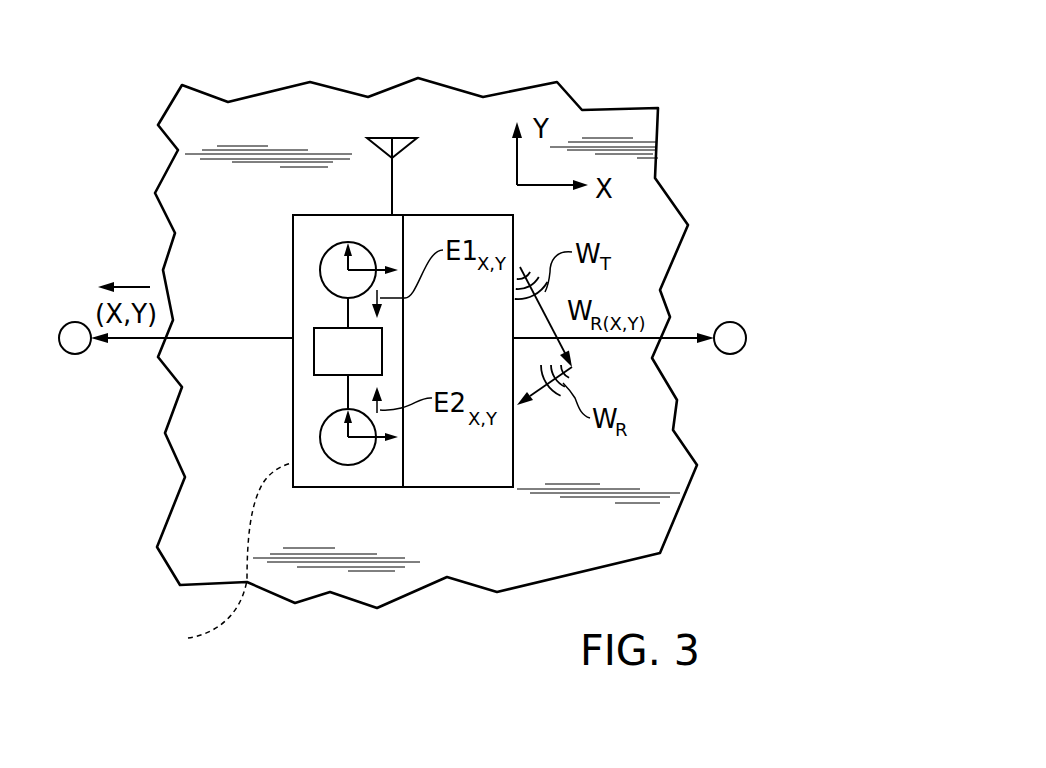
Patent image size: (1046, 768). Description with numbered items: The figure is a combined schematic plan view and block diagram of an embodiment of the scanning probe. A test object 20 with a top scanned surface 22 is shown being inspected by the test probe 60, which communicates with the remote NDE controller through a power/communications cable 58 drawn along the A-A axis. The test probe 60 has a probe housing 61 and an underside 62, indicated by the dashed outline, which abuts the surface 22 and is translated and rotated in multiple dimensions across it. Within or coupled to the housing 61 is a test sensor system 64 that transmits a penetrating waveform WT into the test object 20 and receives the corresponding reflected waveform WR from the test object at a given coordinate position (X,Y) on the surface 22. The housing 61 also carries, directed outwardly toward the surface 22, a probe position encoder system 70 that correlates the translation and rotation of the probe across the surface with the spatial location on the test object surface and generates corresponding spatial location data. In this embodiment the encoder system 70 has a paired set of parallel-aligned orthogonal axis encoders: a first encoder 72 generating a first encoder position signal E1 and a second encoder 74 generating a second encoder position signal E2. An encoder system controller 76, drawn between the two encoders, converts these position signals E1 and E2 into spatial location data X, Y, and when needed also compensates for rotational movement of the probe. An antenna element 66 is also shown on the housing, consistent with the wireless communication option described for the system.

The test object 20 is at (700, 552).
The top scanned surface 22 is at (590, 546).
The power/communications cable 58 is at (127, 344).
The test probe 60 is at (475, 162).
The probe housing 61 is at (437, 487).
The underside 62 is at (224, 556).
The test sensor system 64 is at (488, 442).
The antenna 66 is at (392, 178).
The probe position encoder system 70 is at (312, 223).
The first encoder 72 is at (328, 262).
The second encoder 74 is at (330, 438).
The encoder system controller 76 is at (337, 348).